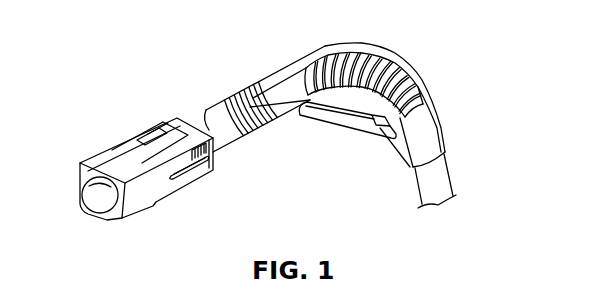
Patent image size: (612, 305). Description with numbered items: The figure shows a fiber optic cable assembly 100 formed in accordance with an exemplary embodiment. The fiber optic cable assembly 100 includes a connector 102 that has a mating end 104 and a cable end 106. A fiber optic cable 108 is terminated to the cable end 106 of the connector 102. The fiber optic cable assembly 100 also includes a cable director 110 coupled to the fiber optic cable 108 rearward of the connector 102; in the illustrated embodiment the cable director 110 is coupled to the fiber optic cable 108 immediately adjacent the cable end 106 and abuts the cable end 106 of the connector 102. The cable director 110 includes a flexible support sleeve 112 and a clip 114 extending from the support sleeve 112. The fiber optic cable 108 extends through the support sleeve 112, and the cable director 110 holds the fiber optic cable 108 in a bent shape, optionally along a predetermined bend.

The fiber optic cable assembly 100 is at (188, 75).
The connector 102 is at (100, 165).
The mating end 104 is at (103, 219).
The cable end 106 is at (259, 82).
The fiber optic cable 108 is at (437, 185).
The cable director 110 is at (393, 37).
The flexible support sleeve 112 is at (422, 95).
The clip 114 is at (350, 118).